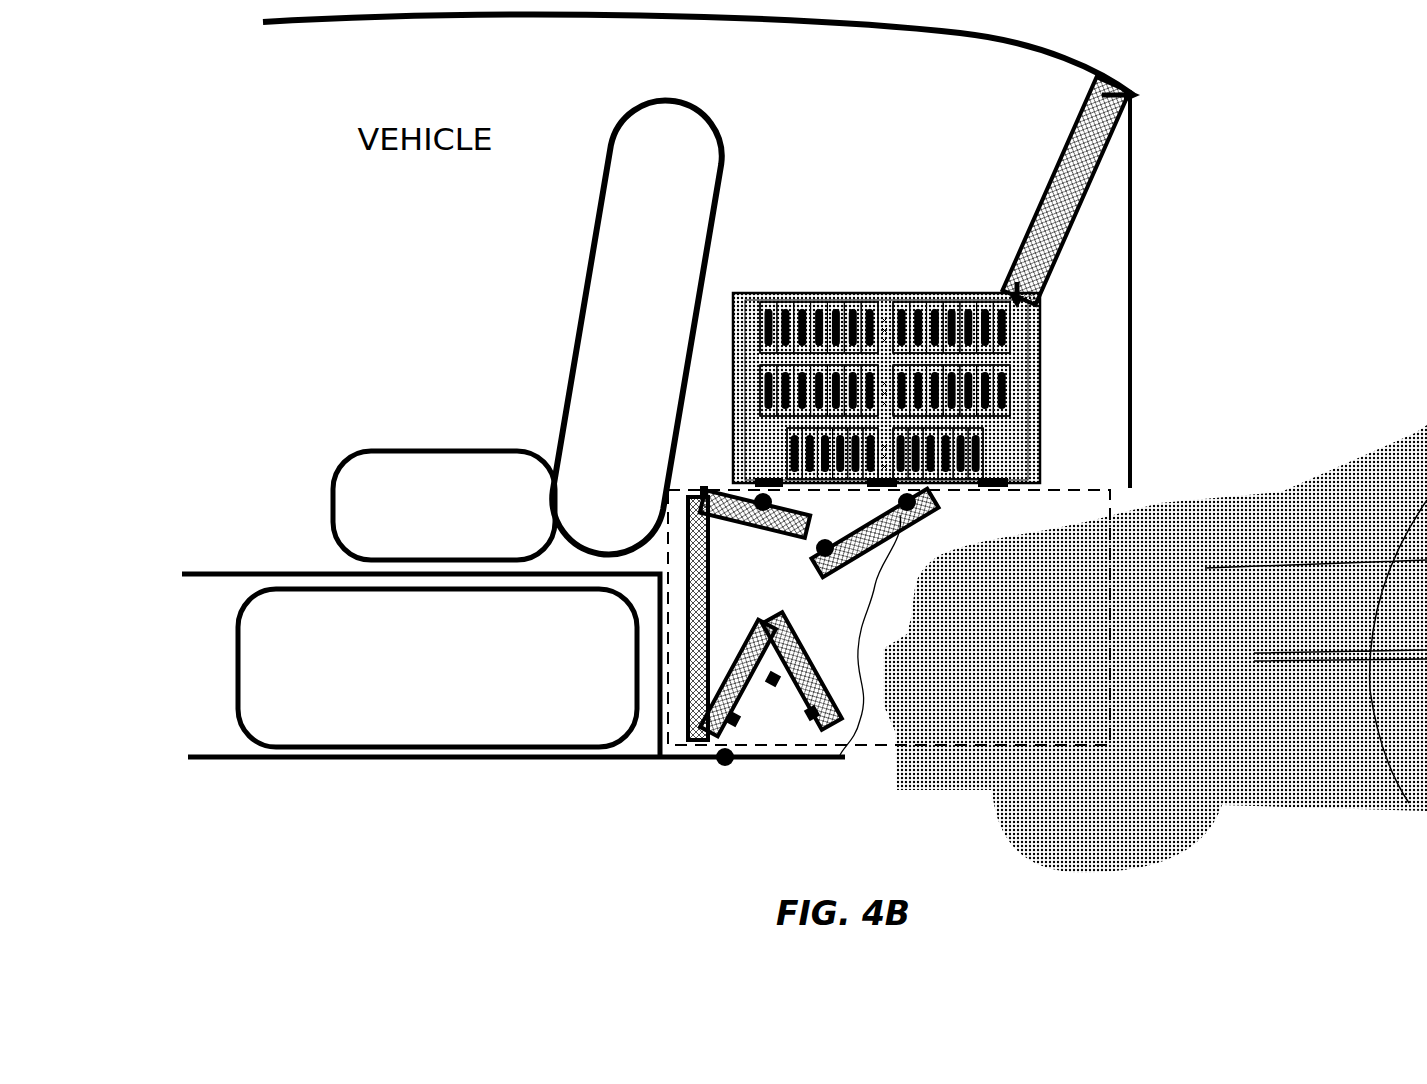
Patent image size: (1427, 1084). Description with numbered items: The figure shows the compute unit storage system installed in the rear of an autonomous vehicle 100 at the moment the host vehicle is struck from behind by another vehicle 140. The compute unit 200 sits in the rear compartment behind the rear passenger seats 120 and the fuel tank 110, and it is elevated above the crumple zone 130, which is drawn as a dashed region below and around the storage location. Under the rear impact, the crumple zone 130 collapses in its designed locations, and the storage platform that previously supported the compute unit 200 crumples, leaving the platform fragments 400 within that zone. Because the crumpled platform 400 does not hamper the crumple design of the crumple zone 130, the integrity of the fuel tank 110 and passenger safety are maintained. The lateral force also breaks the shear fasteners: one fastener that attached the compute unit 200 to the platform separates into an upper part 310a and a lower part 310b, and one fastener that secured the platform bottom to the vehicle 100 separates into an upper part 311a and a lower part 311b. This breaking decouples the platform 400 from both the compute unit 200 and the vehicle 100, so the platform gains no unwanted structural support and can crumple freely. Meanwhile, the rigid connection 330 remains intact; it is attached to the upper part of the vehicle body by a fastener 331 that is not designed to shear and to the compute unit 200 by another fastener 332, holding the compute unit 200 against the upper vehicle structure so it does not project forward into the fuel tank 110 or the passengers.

The autonomous vehicle 100 is at (1105, 72).
The fuel tank 110 is at (238, 640).
The rear passenger seats 120 is at (582, 325).
The crumple zone 130 is at (1110, 700).
The another vehicle 140 is at (1285, 490).
The compute unit 200 is at (875, 292).
The upper part of shear fastener 310a is at (880, 484).
The lower part of shear fastener 310b is at (822, 555).
The upper part of shear fastener 311a is at (736, 726).
The lower part of shear fastener 311b is at (727, 767).
The rigid connection 330 is at (1062, 208).
The fastener 331 is at (1145, 98).
The fastener 332 is at (1013, 287).
The platform fragments 400 is at (723, 517).